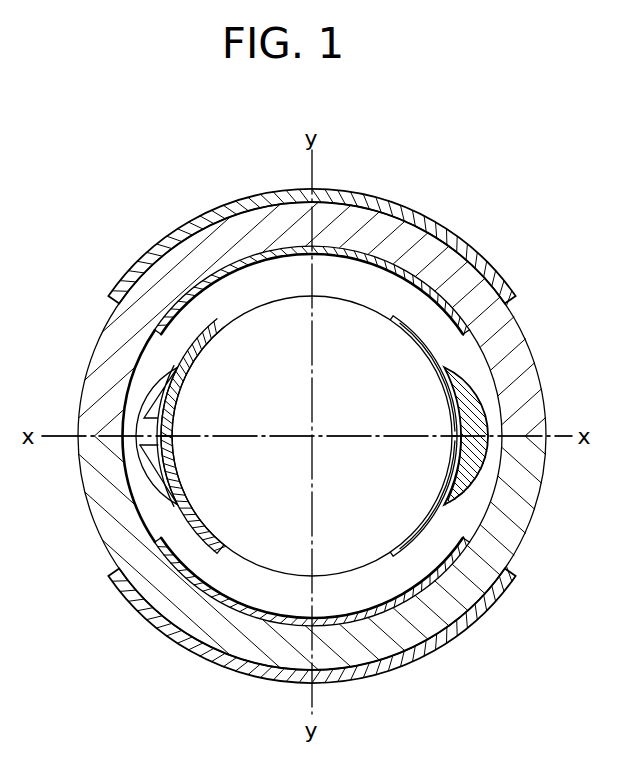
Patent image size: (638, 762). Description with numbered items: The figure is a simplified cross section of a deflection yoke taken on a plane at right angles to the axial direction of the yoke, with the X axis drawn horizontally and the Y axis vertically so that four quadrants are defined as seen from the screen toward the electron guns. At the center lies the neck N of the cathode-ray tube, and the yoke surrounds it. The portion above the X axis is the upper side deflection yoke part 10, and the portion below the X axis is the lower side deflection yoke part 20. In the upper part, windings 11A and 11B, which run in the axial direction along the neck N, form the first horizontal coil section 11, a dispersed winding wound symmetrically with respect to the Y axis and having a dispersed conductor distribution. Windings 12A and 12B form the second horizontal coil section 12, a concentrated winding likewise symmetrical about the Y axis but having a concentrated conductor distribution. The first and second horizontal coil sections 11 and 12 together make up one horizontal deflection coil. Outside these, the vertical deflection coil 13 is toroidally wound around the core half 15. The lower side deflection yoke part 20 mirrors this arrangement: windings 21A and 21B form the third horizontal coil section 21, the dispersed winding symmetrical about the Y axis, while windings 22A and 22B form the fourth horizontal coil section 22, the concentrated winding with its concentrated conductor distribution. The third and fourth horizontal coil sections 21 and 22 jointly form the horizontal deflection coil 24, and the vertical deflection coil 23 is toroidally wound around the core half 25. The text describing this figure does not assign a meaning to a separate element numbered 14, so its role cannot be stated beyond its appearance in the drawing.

The upper side deflection yoke part 10 is at (152, 242).
The first horizontal coil section 11 is at (174, 398).
The winding 11A is at (160, 378).
The winding 11B is at (470, 380).
The second horizontal coil section 12 is at (467, 407).
The winding 12A is at (148, 418).
The winding 12B is at (480, 420).
The vertical deflection coil 13 is at (407, 213).
The upper inner band 14 is at (142, 355).
The core half 15 is at (228, 232).
The lower side deflection yoke part 20 is at (218, 670).
The third horizontal coil section 21 is at (178, 473).
The winding 21A is at (155, 492).
The winding 21B is at (468, 468).
The fourth horizontal coil section 22 is at (470, 458).
The winding 22A is at (146, 455).
The winding 22B is at (480, 445).
The vertical deflection coil 23 is at (400, 658).
The horizontal deflection coil 24 is at (160, 484).
The core half 25 is at (167, 598).
The neck N is at (284, 303).